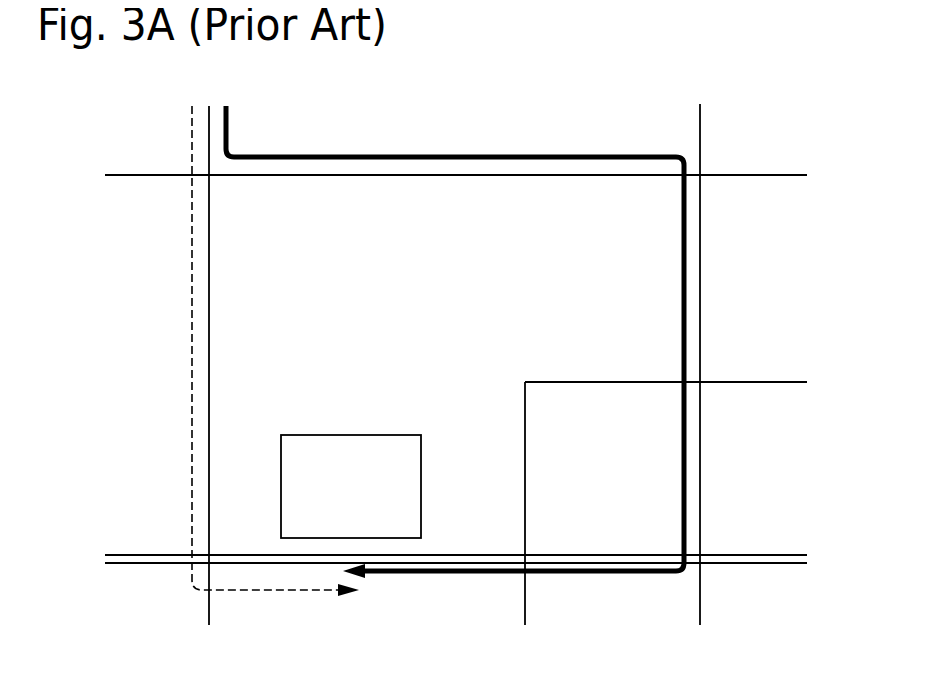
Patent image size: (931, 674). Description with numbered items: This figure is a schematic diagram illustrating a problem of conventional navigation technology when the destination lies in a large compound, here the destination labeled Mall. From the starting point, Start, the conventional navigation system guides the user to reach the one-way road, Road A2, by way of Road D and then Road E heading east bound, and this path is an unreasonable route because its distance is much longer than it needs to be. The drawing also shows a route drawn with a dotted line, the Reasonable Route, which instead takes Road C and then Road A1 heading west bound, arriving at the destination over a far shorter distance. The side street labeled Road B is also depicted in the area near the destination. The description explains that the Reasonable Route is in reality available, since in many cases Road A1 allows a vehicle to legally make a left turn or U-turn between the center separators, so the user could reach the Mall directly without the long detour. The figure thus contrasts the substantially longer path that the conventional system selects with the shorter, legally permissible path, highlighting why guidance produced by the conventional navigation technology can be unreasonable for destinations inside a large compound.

The start point Start is at (206, 79).
The reasonable route Reasonable Route is at (184, 391).
The road D Road D is at (412, 168).
The road C Road C is at (202, 306).
The road E Road E is at (693, 283).
The road B Road B is at (518, 442).
The road A1 Road A1 is at (259, 557).
The road A2 Road A2 is at (535, 546).
The mall Mall is at (327, 436).